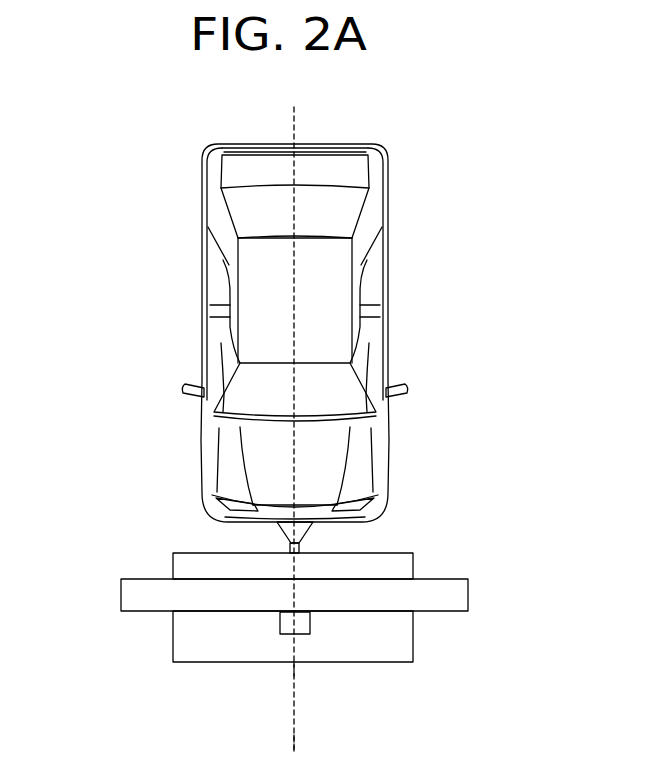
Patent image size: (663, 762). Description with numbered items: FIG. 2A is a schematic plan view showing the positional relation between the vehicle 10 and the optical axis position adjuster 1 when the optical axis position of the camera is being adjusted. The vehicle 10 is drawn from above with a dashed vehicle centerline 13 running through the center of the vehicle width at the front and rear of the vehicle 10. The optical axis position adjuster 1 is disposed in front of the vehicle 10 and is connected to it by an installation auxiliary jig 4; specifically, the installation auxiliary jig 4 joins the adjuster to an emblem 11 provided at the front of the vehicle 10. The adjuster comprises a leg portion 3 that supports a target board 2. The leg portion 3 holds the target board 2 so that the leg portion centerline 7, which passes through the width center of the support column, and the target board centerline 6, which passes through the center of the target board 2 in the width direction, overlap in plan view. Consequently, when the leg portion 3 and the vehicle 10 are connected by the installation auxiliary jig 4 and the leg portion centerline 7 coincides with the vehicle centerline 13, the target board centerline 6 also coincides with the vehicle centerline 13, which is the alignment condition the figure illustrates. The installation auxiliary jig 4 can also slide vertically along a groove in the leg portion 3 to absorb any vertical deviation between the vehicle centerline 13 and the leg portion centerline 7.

The optical axis position adjuster 1 is at (500, 572).
The target board 2 is at (120, 592).
The leg portion 3 is at (413, 643).
The installation auxiliary jig 4 is at (275, 530).
The target board centerline 6 is at (293, 740).
The leg portion centerline 7 is at (292, 668).
The vehicle 10 is at (408, 292).
The emblem 11 is at (315, 527).
The vehicle centerline 13 is at (295, 133).